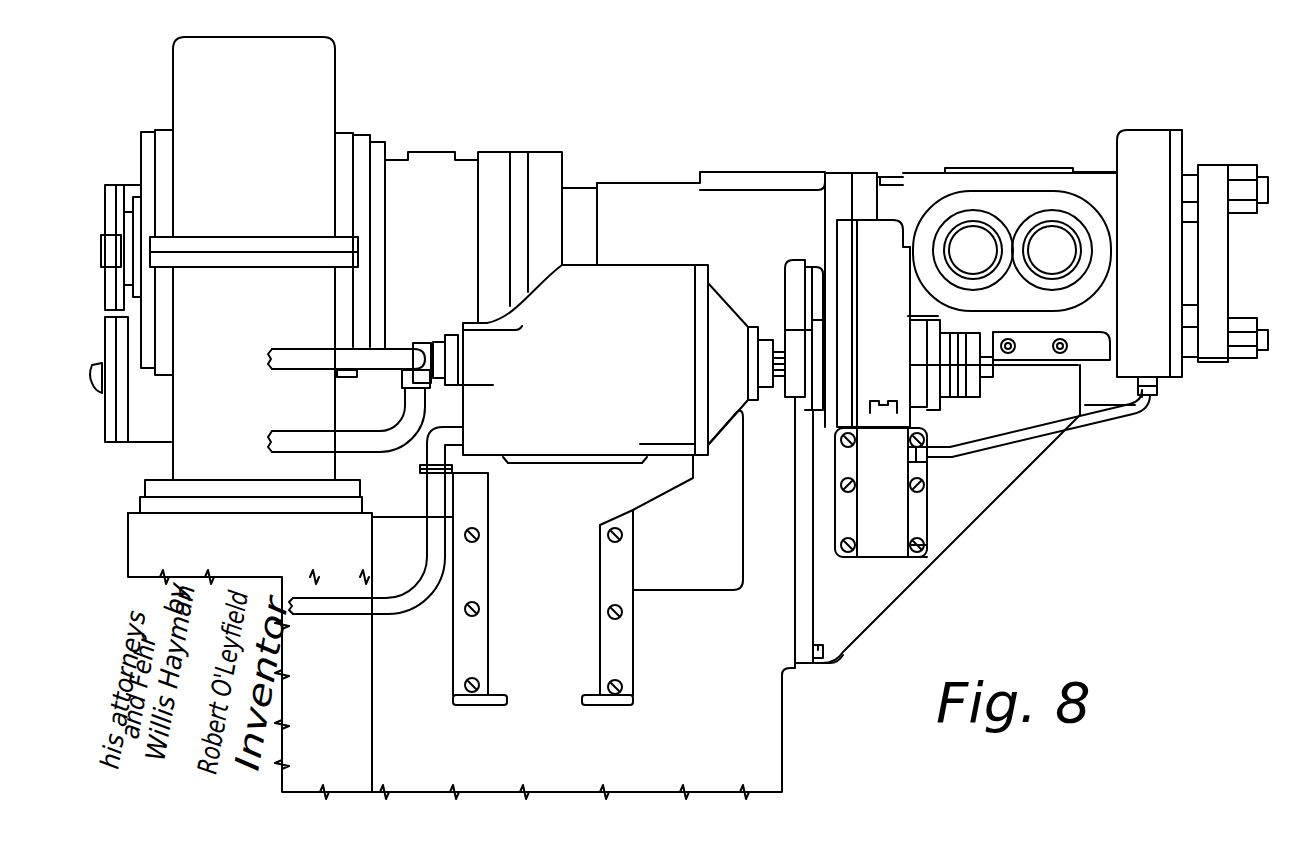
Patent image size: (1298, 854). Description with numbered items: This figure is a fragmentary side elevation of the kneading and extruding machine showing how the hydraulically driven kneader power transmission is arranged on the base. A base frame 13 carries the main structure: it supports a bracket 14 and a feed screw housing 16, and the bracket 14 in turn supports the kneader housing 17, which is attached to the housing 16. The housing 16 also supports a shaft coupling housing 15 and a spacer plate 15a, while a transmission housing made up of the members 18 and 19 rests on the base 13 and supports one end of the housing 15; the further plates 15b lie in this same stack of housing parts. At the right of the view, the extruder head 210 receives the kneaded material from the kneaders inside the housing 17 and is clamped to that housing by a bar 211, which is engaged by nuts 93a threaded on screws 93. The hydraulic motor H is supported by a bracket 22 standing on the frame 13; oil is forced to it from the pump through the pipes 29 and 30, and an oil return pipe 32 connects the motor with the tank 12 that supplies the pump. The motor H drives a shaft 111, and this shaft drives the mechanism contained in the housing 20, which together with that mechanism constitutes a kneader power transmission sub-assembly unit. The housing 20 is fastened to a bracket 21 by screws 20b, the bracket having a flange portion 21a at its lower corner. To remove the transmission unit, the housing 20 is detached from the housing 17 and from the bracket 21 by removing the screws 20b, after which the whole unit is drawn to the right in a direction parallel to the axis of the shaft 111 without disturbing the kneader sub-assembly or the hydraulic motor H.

The transmission housing member 19 is at (176, 64).
The transmission housing member 18 is at (172, 463).
The spacer plates 15b is at (358, 135).
The shaft coupling housing 15 is at (435, 152).
The spacer plate 15a is at (510, 152).
The feed screw housing 16 is at (700, 172).
The hydraulic motor H is at (633, 268).
The shaft 111 is at (779, 392).
The kneader housing 17 is at (873, 178).
The screws 20b is at (884, 401).
The housing 20 is at (1014, 175).
The screws 93 is at (1185, 170).
The extruder head 210 is at (1192, 250).
The nuts 93a is at (1242, 318).
The bar 211 is at (1217, 363).
The pipe 29 is at (349, 350).
The pipe 30 is at (312, 432).
The oil return pipe 32 is at (403, 602).
The base frame 13 is at (128, 515).
The bracket 14 is at (980, 523).
The tank 12 is at (948, 473).
The bracket 21 is at (887, 557).
The bracket flange 21a is at (925, 555).
The bracket 22 is at (549, 700).